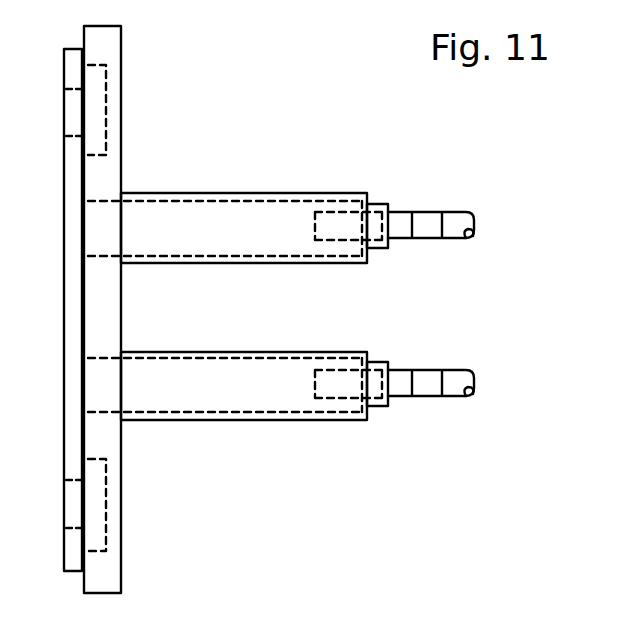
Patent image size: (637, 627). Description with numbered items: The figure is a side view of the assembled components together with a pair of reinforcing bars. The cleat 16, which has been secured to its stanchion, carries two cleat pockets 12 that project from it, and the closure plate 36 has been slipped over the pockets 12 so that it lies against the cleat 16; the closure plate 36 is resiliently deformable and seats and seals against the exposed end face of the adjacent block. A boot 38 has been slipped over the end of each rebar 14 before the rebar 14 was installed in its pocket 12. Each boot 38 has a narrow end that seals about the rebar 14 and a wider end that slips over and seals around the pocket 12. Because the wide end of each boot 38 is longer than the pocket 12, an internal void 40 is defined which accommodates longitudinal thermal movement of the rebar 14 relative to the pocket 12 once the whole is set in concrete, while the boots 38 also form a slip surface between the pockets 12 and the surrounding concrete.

The cleat pocket 12 is at (214, 213).
The rebar 14 is at (427, 240).
The cleat 16 is at (64, 188).
The closure plate 36 is at (121, 88).
The boot 38 is at (268, 194).
The internal void 40 is at (350, 265).